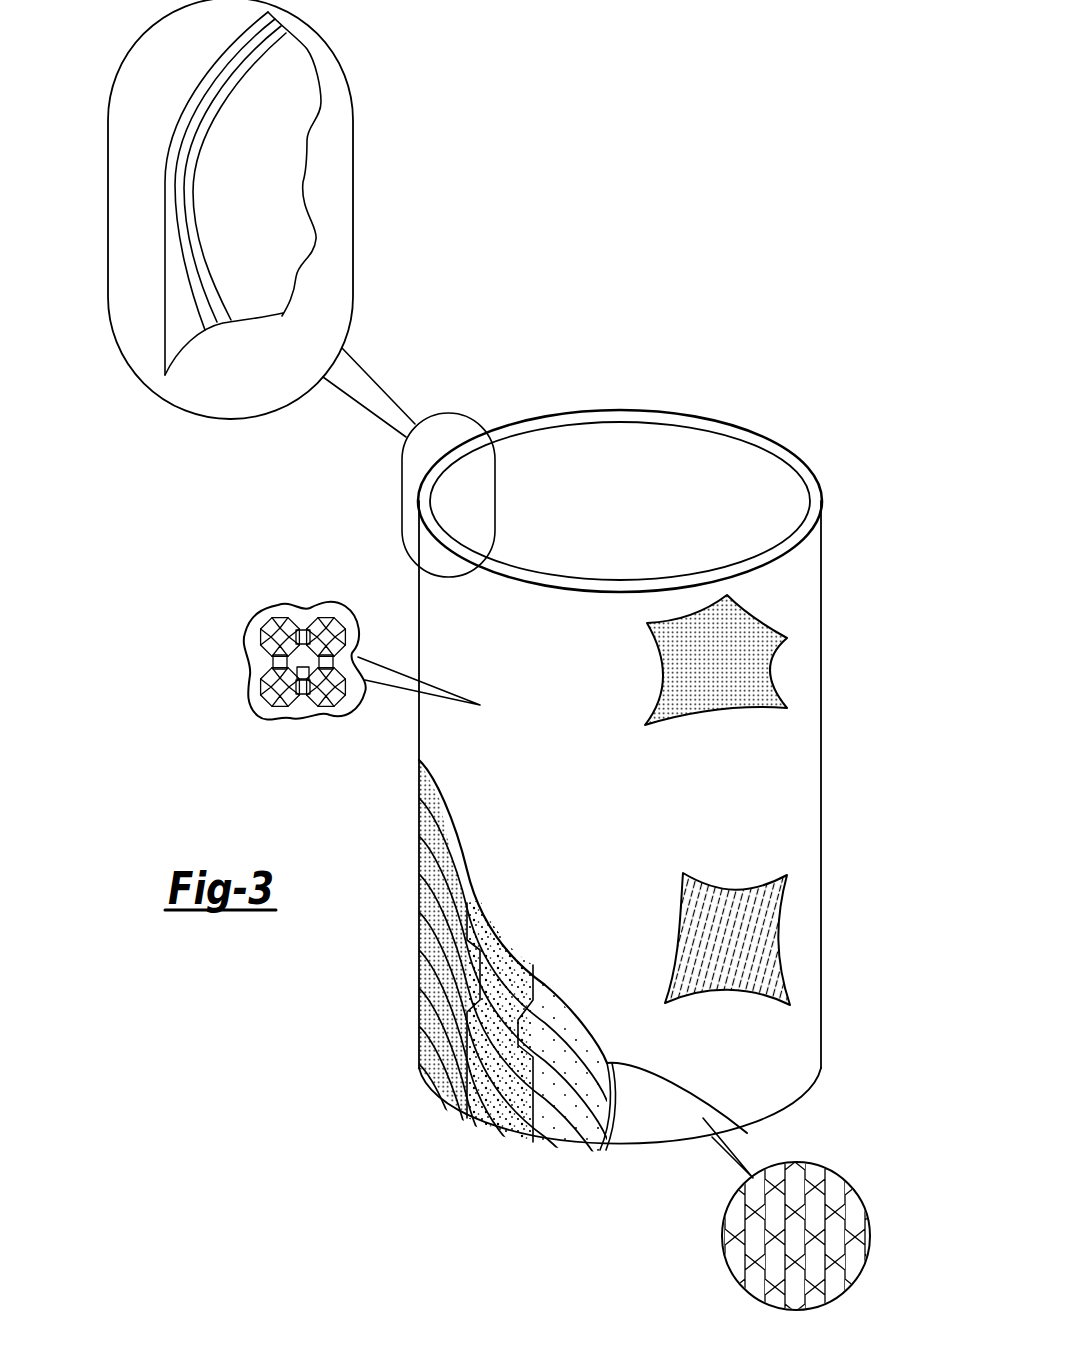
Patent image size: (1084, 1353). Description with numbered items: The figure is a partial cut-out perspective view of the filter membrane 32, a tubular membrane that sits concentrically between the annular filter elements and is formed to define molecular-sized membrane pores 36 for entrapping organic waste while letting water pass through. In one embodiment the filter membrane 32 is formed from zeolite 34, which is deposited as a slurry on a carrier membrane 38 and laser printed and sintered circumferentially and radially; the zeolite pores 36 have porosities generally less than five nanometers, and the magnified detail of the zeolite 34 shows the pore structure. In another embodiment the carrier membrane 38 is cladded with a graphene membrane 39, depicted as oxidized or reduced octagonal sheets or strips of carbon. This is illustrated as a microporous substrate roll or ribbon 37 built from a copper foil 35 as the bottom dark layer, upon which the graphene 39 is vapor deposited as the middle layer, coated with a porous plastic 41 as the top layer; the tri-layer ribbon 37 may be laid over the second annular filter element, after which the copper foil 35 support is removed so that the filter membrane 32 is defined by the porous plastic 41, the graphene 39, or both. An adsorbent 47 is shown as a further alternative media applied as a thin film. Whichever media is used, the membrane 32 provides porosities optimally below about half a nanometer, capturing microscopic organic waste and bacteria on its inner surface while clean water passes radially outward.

The filter membrane 32 is at (732, 362).
The zeolite 34 is at (297, 600).
The copper foil 35 is at (672, 1133).
The membrane pores 36 is at (303, 680).
The microporous substrate ribbon 37 is at (443, 1083).
The carrier membrane 38 is at (673, 680).
The graphene membrane 39 is at (562, 1140).
The porous plastic 41 is at (485, 1118).
The adsorbent 47 is at (782, 902).